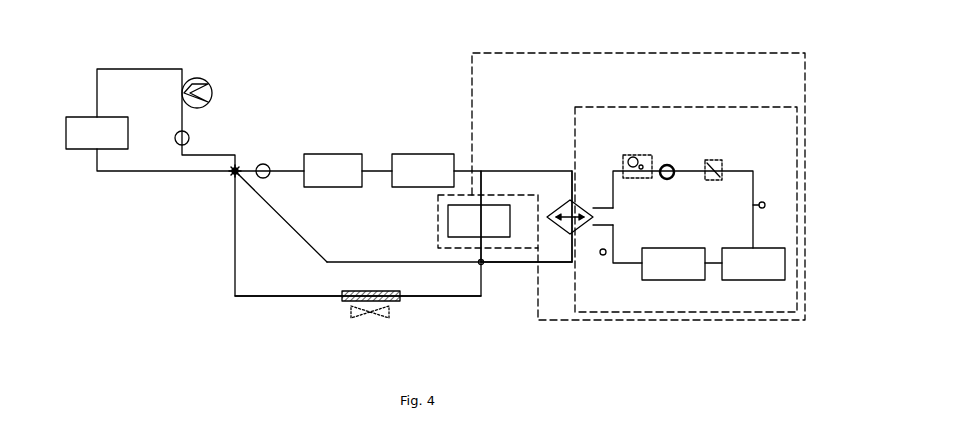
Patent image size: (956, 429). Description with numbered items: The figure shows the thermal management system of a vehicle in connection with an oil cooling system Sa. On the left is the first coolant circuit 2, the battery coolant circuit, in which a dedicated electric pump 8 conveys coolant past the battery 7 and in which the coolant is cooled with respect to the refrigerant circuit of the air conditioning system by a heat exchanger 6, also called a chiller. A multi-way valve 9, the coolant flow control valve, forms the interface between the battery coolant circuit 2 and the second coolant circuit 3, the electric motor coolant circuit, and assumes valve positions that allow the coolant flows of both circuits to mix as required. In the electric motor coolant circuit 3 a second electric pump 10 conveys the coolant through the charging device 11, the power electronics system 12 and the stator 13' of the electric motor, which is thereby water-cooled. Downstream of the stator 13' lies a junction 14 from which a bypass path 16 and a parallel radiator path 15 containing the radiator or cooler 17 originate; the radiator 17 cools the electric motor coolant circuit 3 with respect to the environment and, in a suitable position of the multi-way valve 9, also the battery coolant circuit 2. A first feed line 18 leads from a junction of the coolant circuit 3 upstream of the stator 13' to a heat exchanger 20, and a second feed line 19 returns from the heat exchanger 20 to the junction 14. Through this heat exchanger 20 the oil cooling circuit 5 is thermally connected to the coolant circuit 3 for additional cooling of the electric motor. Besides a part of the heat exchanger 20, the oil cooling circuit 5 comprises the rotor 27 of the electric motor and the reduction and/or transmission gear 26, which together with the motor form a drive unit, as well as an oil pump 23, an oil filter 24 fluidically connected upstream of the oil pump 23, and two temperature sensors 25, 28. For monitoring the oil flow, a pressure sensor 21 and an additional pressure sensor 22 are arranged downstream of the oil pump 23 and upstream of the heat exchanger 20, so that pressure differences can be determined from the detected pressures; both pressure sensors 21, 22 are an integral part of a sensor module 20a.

The first coolant circuit 2 is at (146, 200).
The second coolant circuit 3 is at (389, 118).
The oil cooling circuit 5 is at (633, 102).
The oil cooling system Sa is at (550, 36).
The heat exchanger 6 is at (209, 88).
The battery 7 is at (96, 126).
The electric pump 8 is at (190, 138).
The multi-way valve 9 is at (228, 178).
The electric pump 10 is at (265, 164).
The charging device 11 is at (325, 168).
The power electronics system 12 is at (417, 168).
The stator 13' is at (488, 213).
The junction 14 is at (487, 267).
The radiator path 15 is at (442, 298).
The bypass path 16 is at (331, 261).
The radiator 17 is at (344, 297).
The first feed line 18 is at (520, 172).
The second feed line 19 is at (546, 268).
The heat exchanger 20 is at (577, 209).
The sensor module 20a is at (638, 158).
The pressure sensor 21 is at (631, 160).
The additional pressure sensor 22 is at (647, 161).
The oil pump 23 is at (660, 179).
The oil filter 24 is at (720, 163).
The temperature sensor 25 is at (764, 208).
The reduction and/or transmission gear 26 is at (741, 248).
The rotor 27 is at (665, 248).
The temperature sensor 28 is at (601, 255).